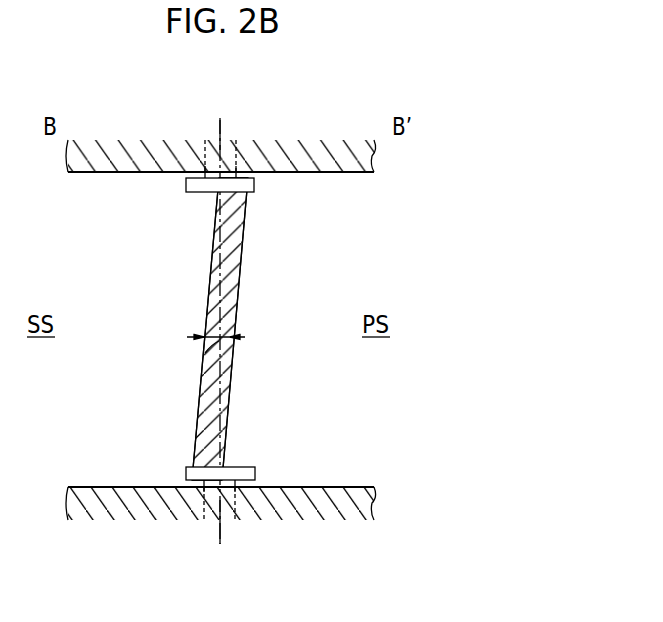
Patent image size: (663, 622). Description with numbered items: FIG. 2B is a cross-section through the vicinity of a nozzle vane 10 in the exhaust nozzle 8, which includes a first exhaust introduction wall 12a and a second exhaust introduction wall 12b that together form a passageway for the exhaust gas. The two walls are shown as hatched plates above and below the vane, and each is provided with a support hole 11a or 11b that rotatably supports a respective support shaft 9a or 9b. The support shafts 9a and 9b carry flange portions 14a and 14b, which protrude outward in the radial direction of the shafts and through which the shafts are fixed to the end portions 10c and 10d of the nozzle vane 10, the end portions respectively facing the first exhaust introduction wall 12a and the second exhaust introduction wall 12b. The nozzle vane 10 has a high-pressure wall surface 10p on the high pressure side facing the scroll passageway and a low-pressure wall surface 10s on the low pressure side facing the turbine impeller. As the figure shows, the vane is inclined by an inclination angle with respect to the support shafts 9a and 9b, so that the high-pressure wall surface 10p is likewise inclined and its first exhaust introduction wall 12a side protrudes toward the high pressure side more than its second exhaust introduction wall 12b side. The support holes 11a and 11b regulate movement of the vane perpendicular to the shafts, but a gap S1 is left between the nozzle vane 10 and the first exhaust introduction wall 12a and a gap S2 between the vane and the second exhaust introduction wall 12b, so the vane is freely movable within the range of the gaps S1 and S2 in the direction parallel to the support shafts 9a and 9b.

The exhaust nozzle 8 is at (441, 217).
The support shaft 9a is at (215, 172).
The support shaft 9b is at (212, 487).
The nozzle vane 10 is at (250, 271).
The end portion 10c is at (249, 178).
The end portion 10d is at (199, 489).
The high-pressure wall surface 10p is at (238, 296).
The low-pressure wall surface 10s is at (207, 308).
The support hole 11a is at (221, 140).
The support hole 11b is at (228, 512).
The first exhaust introduction wall 12a is at (328, 173).
The second exhaust introduction wall 12b is at (348, 487).
The flange portion 14a is at (186, 187).
The flange portion 14b is at (233, 466).
The gap S1 is at (188, 176).
The gap S2 is at (252, 485).